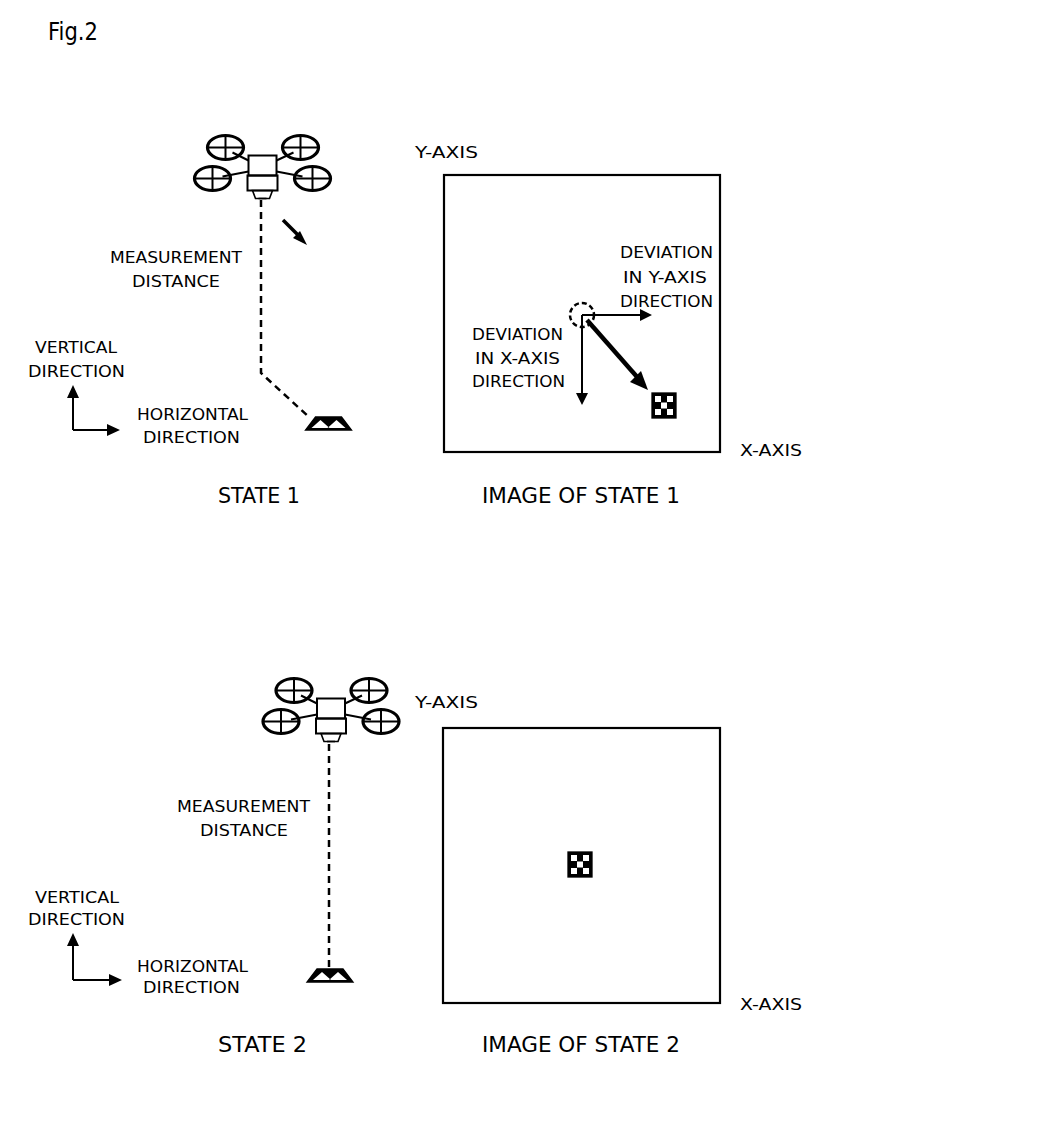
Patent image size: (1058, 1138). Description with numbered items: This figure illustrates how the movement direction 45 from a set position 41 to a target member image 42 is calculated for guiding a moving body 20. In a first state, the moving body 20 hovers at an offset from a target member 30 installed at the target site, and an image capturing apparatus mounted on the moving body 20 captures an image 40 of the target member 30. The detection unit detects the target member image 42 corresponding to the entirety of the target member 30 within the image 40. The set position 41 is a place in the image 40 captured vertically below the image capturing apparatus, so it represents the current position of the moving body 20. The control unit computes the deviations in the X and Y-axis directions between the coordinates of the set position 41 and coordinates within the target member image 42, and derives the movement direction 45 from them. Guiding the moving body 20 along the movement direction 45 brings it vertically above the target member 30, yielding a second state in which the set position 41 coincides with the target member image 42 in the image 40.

The moving body 20 is at (262, 152).
The target member 30 is at (329, 417).
The image 40 is at (583, 175).
The set position 41 is at (583, 303).
The target member image 42 is at (675, 406).
The movement direction 45 is at (612, 345).